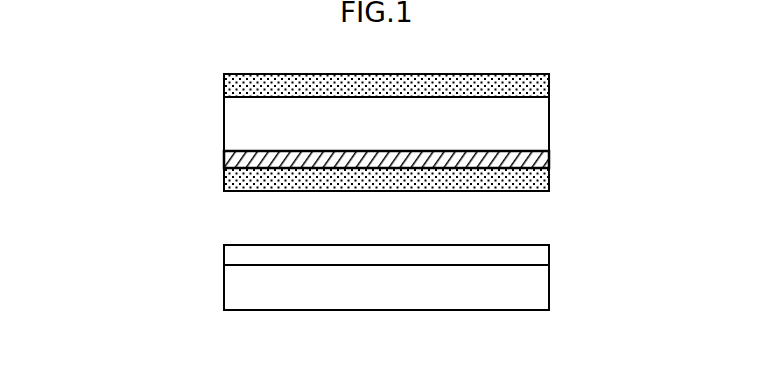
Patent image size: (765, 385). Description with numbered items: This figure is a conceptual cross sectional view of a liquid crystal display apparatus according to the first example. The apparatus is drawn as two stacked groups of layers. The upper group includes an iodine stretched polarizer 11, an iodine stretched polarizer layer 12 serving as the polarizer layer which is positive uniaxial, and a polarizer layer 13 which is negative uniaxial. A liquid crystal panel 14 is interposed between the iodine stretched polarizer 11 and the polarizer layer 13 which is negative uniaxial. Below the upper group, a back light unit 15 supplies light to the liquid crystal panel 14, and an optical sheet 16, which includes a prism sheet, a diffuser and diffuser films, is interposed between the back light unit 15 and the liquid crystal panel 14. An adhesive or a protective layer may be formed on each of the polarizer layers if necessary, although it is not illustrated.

The iodine stretched polarizer 11 is at (226, 86).
The iodine stretched polarizer layer 12 is at (533, 188).
The polarizer layer which is negative uniaxial 13 is at (226, 167).
The liquid crystal panel 14 is at (527, 139).
The back light unit 15 is at (258, 290).
The optical sheet 16 is at (234, 252).